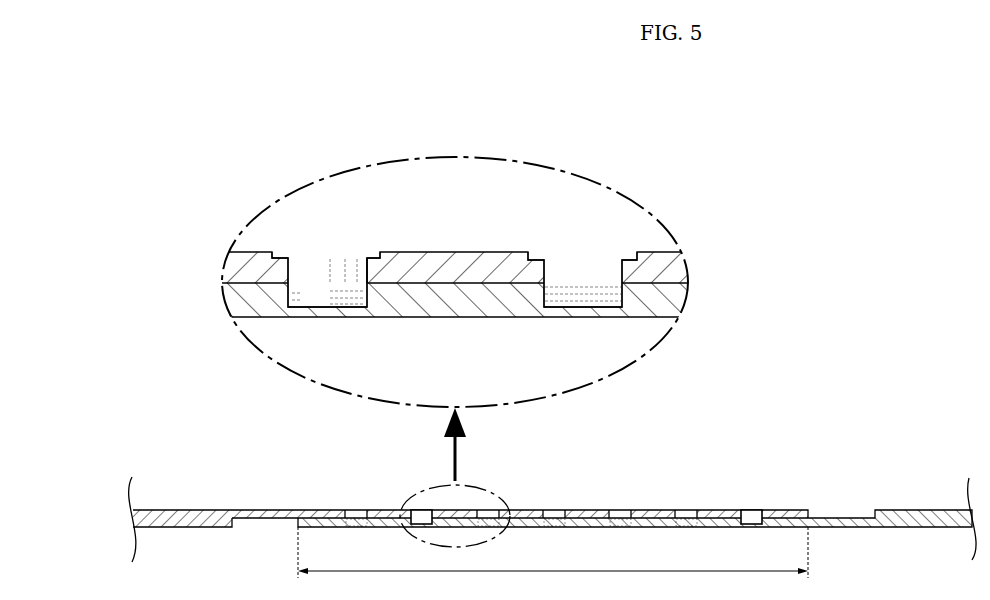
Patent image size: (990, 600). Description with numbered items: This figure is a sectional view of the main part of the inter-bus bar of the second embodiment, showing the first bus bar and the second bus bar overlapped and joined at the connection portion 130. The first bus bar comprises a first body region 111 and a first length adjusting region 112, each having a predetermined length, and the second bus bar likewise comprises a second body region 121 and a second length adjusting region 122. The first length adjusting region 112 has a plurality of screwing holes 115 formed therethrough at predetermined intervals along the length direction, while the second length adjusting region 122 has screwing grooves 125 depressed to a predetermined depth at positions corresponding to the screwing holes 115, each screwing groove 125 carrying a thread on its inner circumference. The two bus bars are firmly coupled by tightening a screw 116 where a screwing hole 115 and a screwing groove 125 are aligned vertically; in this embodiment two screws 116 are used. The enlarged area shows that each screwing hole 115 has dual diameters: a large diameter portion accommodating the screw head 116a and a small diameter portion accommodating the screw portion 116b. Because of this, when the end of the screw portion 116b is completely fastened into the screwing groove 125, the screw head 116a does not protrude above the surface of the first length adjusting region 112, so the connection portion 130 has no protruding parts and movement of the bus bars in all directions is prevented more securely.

The first body region 111 is at (197, 510).
The first length adjusting region 112 is at (464, 257).
The screwing hole 115 is at (586, 261).
The screw 116 is at (419, 508).
The screw head 116a is at (334, 251).
The screw portion 116b is at (369, 279).
The second body region 121 is at (929, 510).
The second length adjusting region 122 is at (467, 305).
The screwing groove 125 is at (584, 298).
The connection portion 130 is at (553, 561).